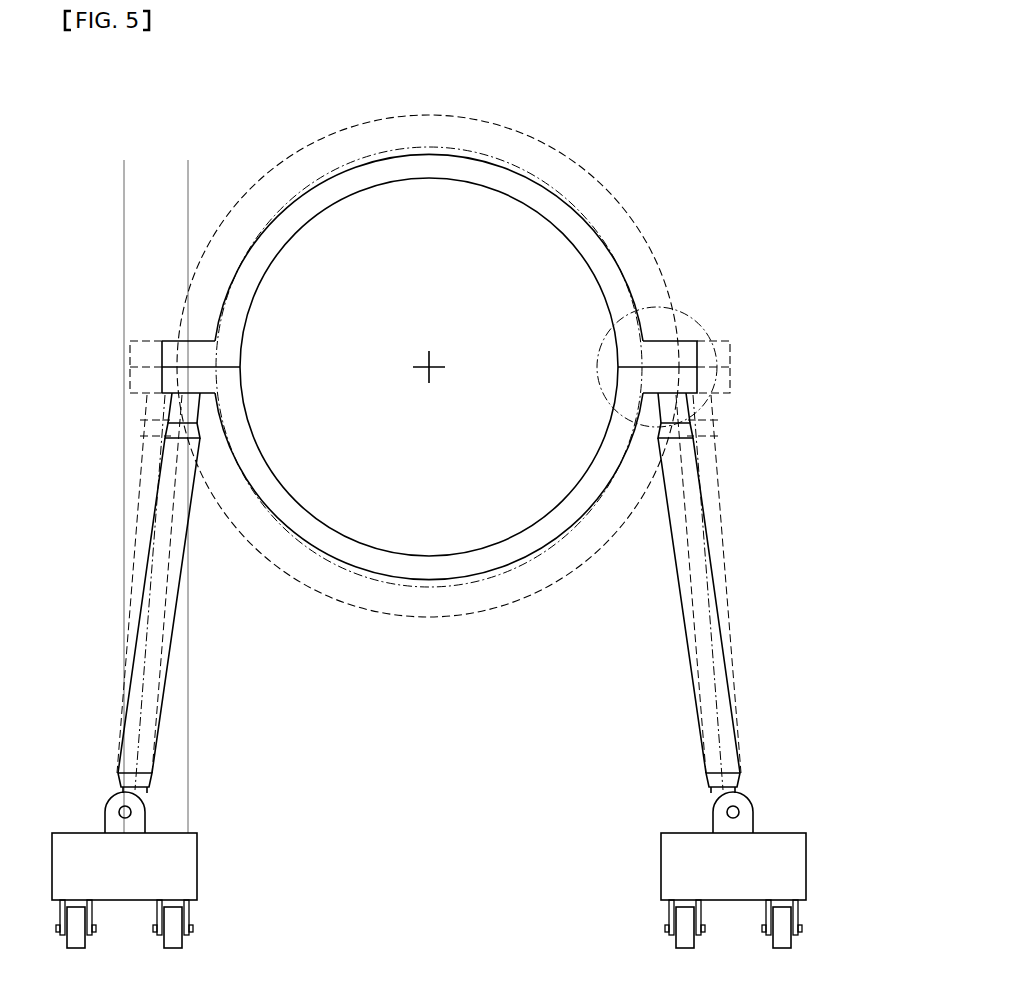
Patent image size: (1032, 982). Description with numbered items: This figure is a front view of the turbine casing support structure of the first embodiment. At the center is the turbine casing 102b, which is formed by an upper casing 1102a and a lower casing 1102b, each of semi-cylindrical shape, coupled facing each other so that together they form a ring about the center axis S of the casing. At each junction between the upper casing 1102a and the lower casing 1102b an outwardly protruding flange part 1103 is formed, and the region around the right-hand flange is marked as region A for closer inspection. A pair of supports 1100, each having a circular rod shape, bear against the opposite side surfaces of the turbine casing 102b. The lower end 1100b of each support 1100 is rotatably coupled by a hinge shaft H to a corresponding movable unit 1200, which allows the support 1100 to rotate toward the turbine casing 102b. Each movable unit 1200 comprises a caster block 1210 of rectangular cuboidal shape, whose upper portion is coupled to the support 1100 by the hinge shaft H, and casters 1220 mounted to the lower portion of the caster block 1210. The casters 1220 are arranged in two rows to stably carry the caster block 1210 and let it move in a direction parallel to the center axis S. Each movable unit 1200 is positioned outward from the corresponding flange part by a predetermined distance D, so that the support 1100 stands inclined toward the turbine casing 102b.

The support 1100 is at (157, 642).
The lower end of the support 1100b is at (140, 797).
The hinge shaft H is at (133, 810).
The movable unit 1200 is at (233, 891).
The caster block 1210 is at (177, 875).
The caster 1220 is at (177, 920).
The turbine casing 102b is at (513, 366).
The upper casing 1102a is at (605, 247).
The lower casing 1102b is at (710, 450).
The flange part 1103 is at (682, 355).
The center axis S is at (432, 364).
The region A is at (675, 304).
The predetermined distance D is at (235, 183).